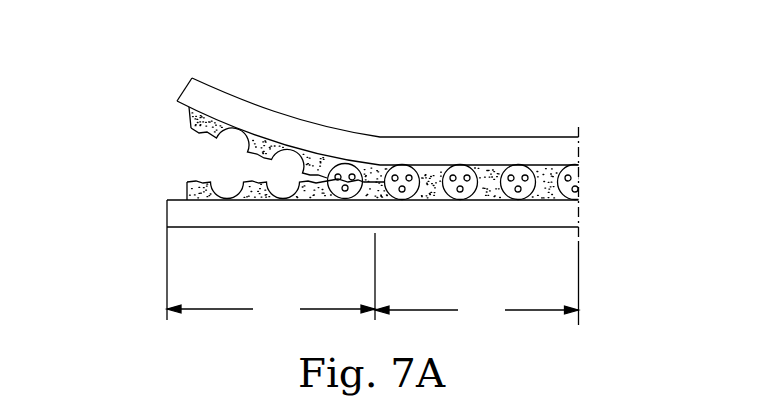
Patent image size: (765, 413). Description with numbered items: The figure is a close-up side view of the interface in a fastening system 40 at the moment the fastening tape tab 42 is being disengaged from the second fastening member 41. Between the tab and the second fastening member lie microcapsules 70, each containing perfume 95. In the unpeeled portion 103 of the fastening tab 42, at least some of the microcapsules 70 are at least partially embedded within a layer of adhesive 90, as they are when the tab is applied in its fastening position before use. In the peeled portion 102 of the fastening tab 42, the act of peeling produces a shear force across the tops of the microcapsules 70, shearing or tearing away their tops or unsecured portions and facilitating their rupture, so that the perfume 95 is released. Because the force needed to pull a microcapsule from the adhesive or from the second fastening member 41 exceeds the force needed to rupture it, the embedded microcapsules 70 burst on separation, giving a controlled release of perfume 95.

The fastening system 40 is at (555, 115).
The second fastening member 41 is at (465, 222).
The fastening tape tab 42 is at (265, 118).
The microcapsules 70 is at (402, 166).
The layer of adhesive 90 is at (189, 120).
The perfume 95 is at (517, 165).
The peeled portion 102 is at (271, 277).
The unpeeled portion 103 is at (477, 312).